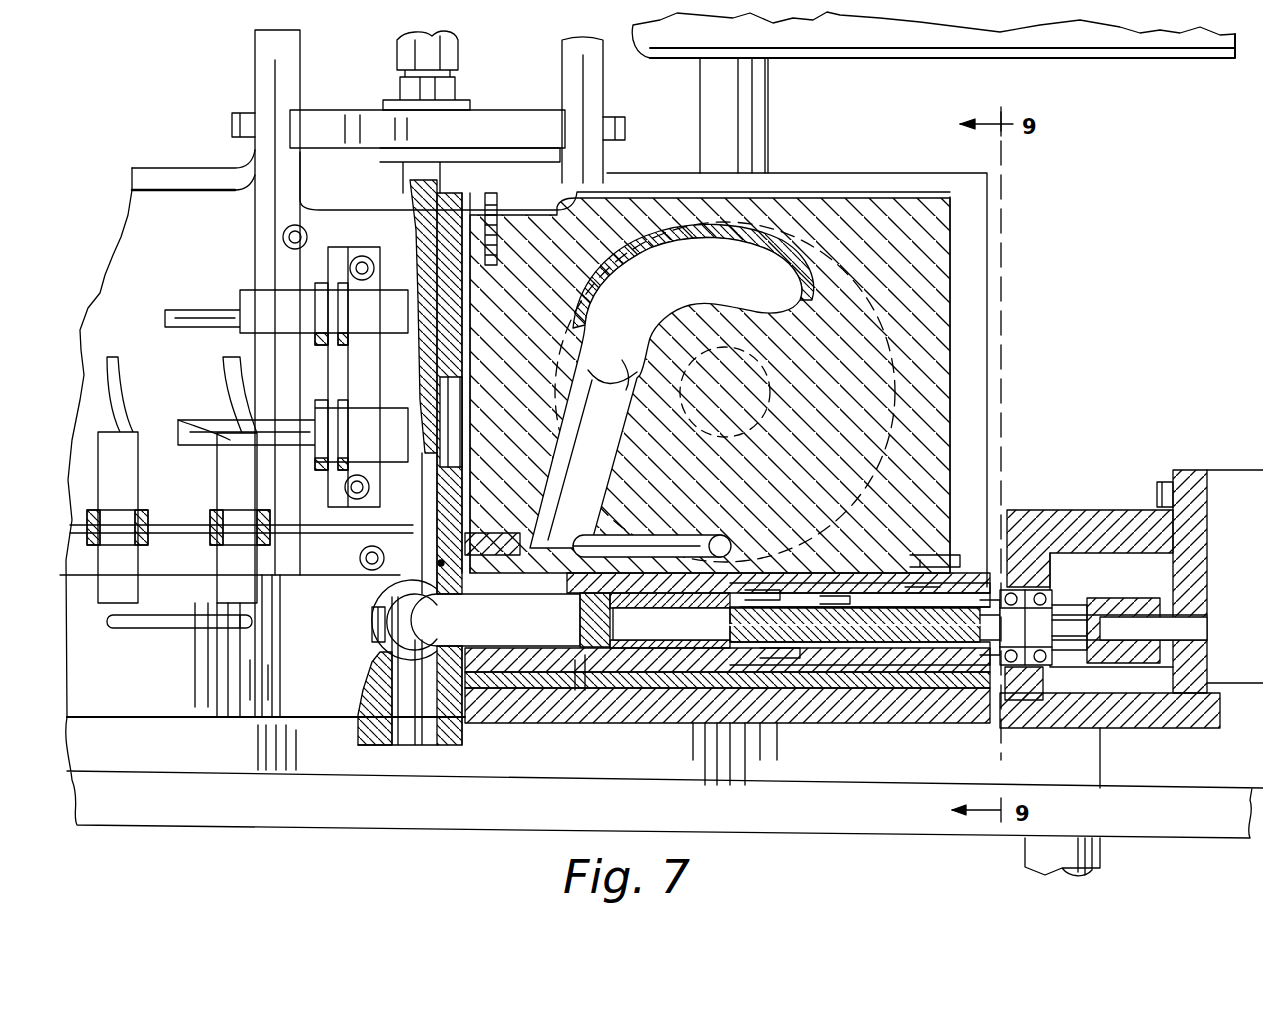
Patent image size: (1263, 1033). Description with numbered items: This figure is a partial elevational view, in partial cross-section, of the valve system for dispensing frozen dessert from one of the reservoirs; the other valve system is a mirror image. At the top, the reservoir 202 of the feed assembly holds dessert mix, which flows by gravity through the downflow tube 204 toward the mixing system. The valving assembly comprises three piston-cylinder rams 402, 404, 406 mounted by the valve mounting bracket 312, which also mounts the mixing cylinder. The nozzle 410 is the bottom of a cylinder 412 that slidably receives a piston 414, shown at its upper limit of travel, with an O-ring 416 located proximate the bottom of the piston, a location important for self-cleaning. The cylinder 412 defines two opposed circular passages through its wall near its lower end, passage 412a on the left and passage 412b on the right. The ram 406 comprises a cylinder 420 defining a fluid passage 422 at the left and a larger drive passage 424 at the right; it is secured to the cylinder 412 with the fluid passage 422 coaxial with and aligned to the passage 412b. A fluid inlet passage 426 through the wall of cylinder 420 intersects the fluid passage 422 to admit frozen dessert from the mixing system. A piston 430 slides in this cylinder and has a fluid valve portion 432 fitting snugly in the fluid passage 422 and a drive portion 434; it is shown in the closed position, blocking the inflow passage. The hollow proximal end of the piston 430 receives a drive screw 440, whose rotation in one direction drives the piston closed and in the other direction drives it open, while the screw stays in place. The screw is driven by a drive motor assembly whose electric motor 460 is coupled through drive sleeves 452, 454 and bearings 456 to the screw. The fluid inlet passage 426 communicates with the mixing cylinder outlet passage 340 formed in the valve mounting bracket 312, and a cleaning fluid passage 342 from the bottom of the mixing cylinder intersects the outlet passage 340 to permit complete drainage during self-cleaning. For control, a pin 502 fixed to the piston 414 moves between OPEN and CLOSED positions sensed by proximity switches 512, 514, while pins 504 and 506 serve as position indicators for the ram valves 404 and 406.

The reservoir 202 is at (824, 60).
The downflow tube 204 is at (768, 130).
The valve mounting bracket 312 is at (897, 200).
The mixing cylinder outlet passage 340 is at (672, 386).
The cleaning fluid passage 342 is at (573, 540).
The ram 402 is at (383, 33).
The ram 404 is at (190, 722).
The ram 406 is at (1148, 728).
The nozzle 410 is at (375, 745).
The cylinder 412 is at (428, 745).
The passage 412a is at (383, 612).
The passage 412b is at (405, 640).
The piston 414 is at (432, 485).
The O-ring 416 is at (438, 564).
The cylinder 420 is at (778, 698).
The fluid passage 422 is at (490, 593).
The drive passage 424 is at (870, 585).
The fluid inlet passage 426 is at (538, 593).
The piston 430 is at (655, 690).
The fluid valve portion 432 is at (640, 640).
The drive portion 434 is at (716, 648).
The drive screw 440 is at (888, 638).
The drive sleeve 452 is at (1065, 664).
The drive sleeve 454 is at (1095, 602).
The bearings 456 is at (1042, 592).
The electric motor 460 is at (1230, 470).
The pin 502 is at (420, 315).
The pin 504 is at (238, 626).
The pin 506 is at (580, 690).
The proximity switch 512 is at (293, 435).
The proximity switch 514 is at (286, 314).